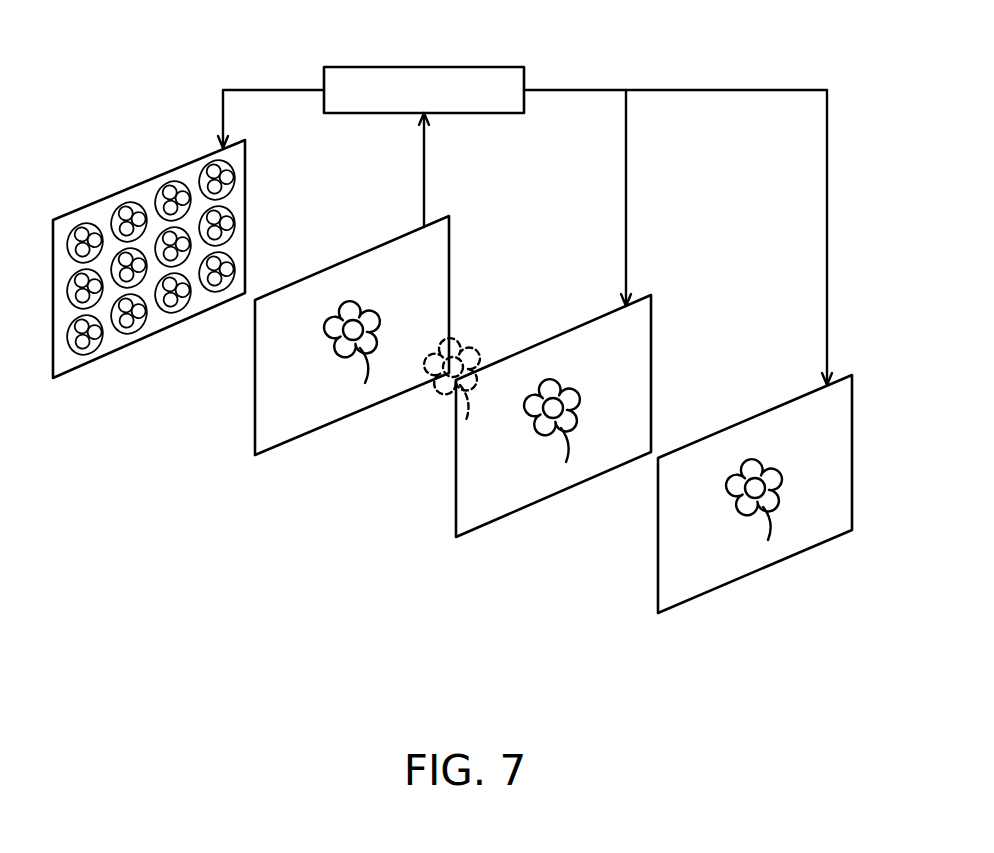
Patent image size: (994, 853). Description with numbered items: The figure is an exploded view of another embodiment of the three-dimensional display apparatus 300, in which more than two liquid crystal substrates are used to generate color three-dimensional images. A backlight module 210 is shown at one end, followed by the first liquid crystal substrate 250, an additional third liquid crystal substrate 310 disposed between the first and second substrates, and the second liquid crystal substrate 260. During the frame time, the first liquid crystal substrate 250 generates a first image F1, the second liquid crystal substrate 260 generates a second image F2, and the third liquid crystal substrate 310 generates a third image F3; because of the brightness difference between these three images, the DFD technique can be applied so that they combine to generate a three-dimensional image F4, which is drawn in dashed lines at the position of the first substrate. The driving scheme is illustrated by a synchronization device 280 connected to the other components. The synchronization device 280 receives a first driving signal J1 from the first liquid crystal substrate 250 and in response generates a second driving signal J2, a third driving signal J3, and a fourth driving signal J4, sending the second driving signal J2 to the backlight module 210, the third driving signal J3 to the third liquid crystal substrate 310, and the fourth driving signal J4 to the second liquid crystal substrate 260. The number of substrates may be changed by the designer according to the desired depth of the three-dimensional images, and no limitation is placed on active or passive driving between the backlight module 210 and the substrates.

The 3D display apparatus 300 is at (477, 363).
The synchronization device 280 is at (425, 67).
The backlight module 210 is at (146, 181).
The first liquid crystal substrate 250 is at (272, 448).
The third liquid crystal substrate 310 is at (591, 479).
The second liquid crystal substrate 260 is at (793, 556).
The first driving signal J1 is at (424, 156).
The second driving signal J2 is at (287, 89).
The third driving signal J3 is at (626, 156).
The fourth driving signal J4 is at (827, 156).
The first image F1 is at (322, 347).
The second image F2 is at (749, 514).
The third image F3 is at (549, 434).
The 3D image F4 is at (449, 398).